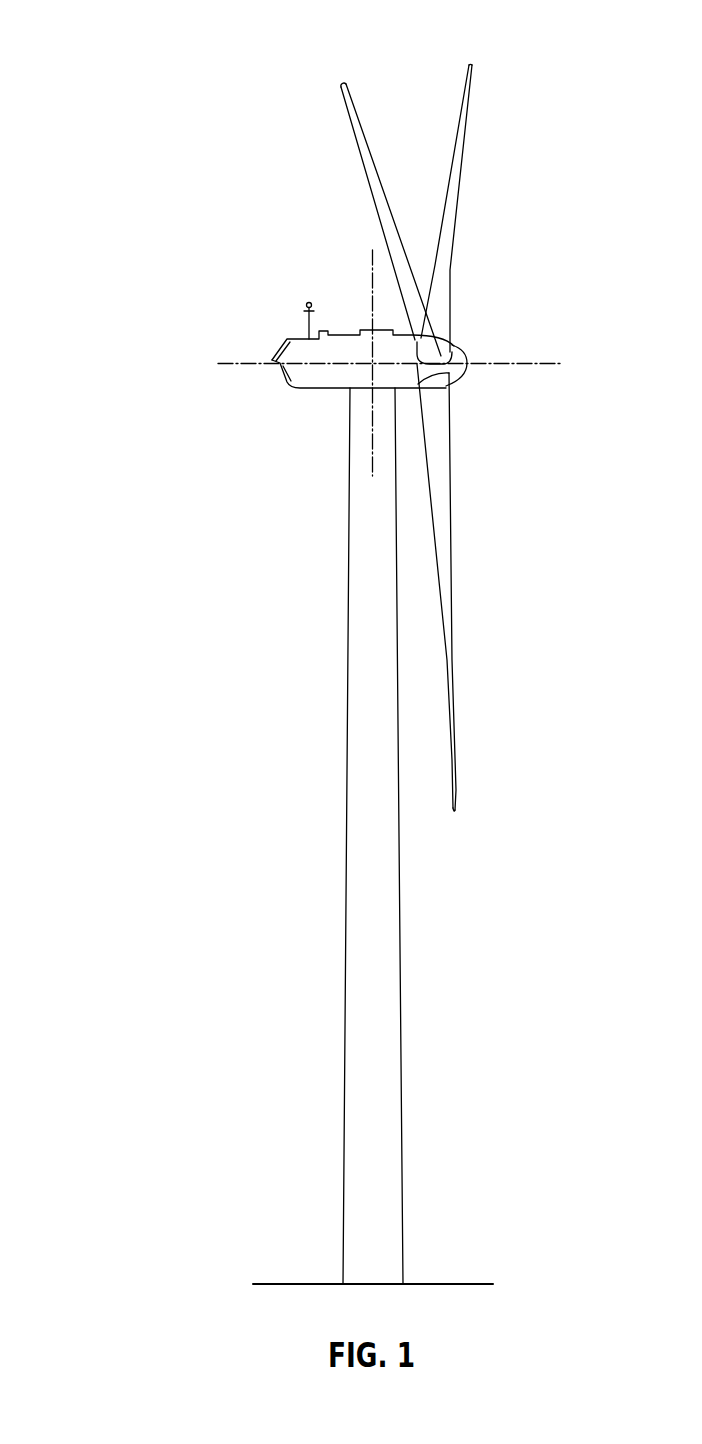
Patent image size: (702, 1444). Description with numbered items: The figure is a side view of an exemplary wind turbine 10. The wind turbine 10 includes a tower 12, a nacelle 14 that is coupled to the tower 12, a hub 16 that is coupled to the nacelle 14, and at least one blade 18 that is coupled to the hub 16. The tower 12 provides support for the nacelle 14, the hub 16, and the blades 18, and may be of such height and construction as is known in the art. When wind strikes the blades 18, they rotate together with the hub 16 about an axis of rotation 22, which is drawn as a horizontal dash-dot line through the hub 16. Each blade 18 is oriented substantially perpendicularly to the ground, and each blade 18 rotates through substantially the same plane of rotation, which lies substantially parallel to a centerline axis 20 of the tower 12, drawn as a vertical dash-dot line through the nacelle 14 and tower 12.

The wind turbine 10 is at (132, 54).
The tower 12 is at (347, 880).
The nacelle 14 is at (283, 383).
The hub 16 is at (457, 350).
The blade 18 is at (450, 557).
The centerline axis 20 is at (372, 281).
The axis of rotation 22 is at (528, 366).